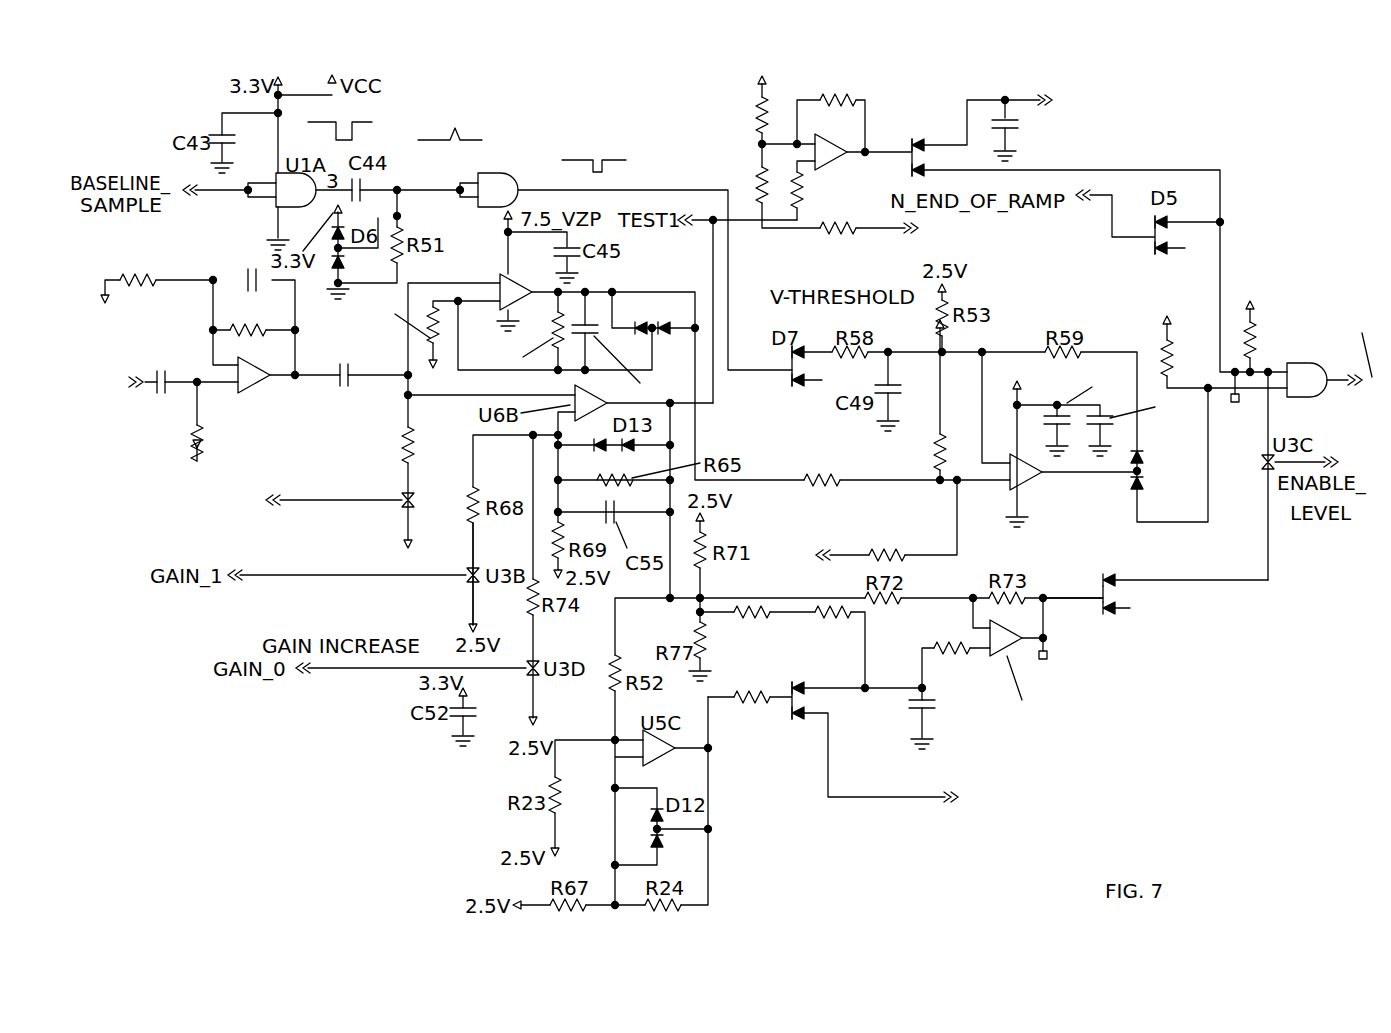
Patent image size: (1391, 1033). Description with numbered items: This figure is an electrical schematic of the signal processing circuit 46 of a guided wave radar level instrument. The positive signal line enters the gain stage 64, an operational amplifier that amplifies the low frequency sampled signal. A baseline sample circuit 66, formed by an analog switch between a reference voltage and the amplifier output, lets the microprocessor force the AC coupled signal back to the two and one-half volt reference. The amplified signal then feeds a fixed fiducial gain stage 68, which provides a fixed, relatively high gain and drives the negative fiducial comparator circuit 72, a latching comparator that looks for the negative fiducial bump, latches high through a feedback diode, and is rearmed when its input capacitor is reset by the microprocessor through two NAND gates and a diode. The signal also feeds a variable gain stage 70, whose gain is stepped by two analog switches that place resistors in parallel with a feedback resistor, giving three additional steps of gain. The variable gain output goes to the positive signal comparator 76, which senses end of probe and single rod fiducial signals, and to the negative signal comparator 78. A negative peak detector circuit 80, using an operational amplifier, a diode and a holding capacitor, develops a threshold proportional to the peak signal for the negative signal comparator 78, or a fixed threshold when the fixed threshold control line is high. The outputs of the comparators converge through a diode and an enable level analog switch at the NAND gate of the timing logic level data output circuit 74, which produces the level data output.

The signal processing circuit 46 is at (618, 137).
The gain stage 64 is at (275, 418).
The baseline sample circuit 66 is at (383, 484).
The fixed fiducial gain stage 68 is at (612, 278).
The variable gain stage 70 is at (710, 417).
The negative fiducial comparator circuit 72 is at (1052, 512).
The timing logic level data output circuit 74 is at (1308, 252).
The positive signal comparator 76 is at (887, 120).
The negative signal comparator 78 is at (1112, 668).
The negative peak detector circuit 80 is at (809, 768).